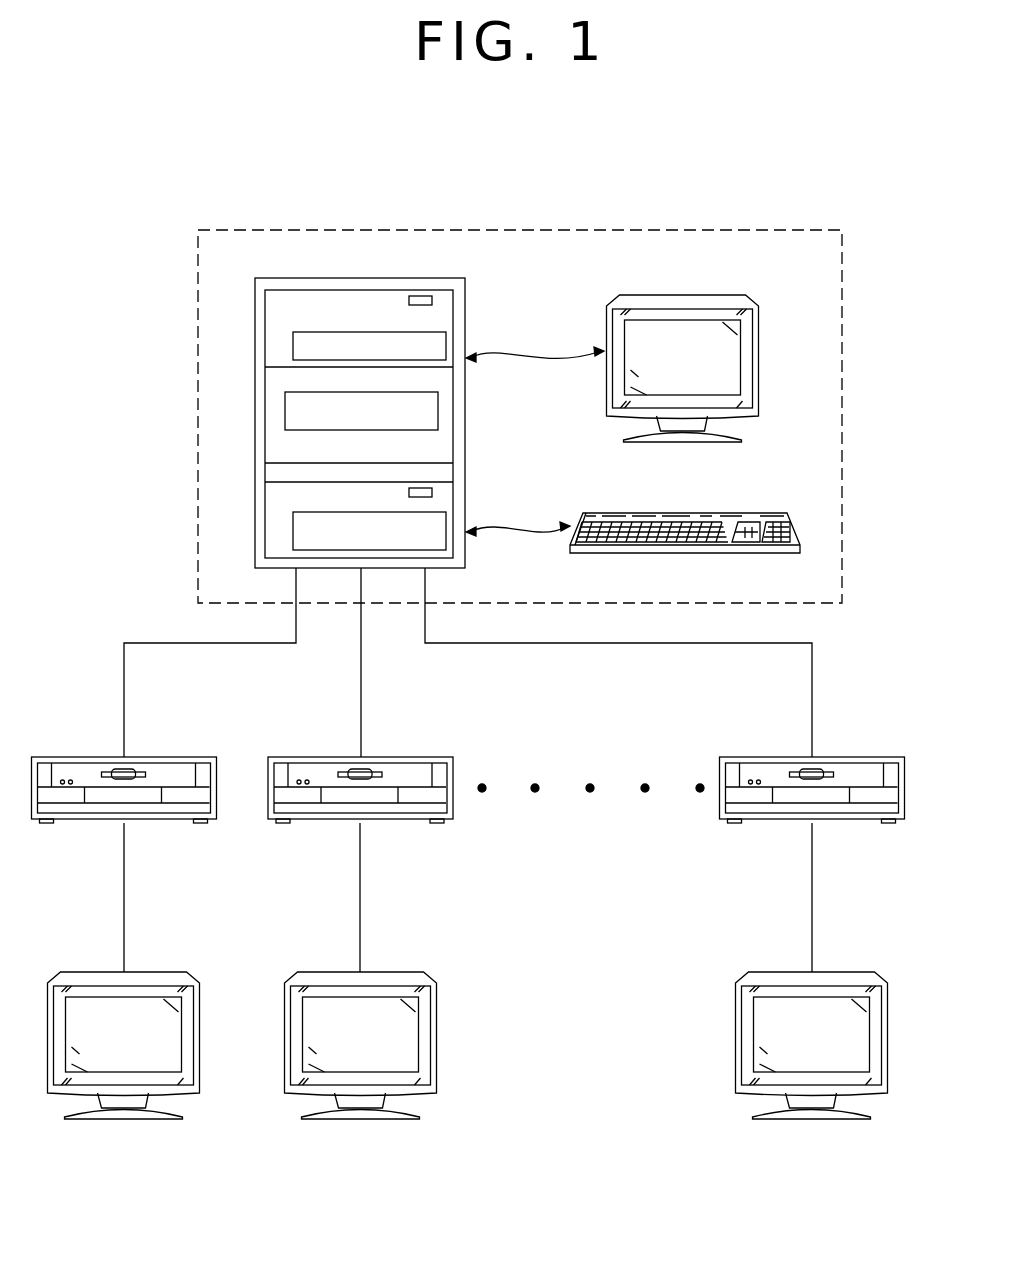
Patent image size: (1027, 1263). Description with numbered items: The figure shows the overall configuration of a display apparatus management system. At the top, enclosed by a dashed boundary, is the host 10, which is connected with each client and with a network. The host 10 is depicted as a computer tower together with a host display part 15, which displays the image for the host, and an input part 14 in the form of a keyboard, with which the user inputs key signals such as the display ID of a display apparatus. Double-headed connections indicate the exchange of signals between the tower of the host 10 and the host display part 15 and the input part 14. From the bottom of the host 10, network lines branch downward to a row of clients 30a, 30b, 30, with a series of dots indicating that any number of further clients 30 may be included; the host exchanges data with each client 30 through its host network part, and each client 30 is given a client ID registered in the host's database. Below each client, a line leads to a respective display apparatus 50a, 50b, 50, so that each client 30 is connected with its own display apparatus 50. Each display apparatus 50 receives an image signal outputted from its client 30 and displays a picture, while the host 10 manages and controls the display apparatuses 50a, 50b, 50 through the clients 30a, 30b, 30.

The host 10 is at (690, 230).
The host display part 15 is at (761, 378).
The input part 14 is at (801, 530).
The client 30a is at (179, 757).
The client 30b is at (417, 757).
The client 30 is at (865, 757).
The display apparatus 50a is at (155, 972).
The display apparatus 50b is at (395, 972).
The display apparatus 50 is at (845, 972).